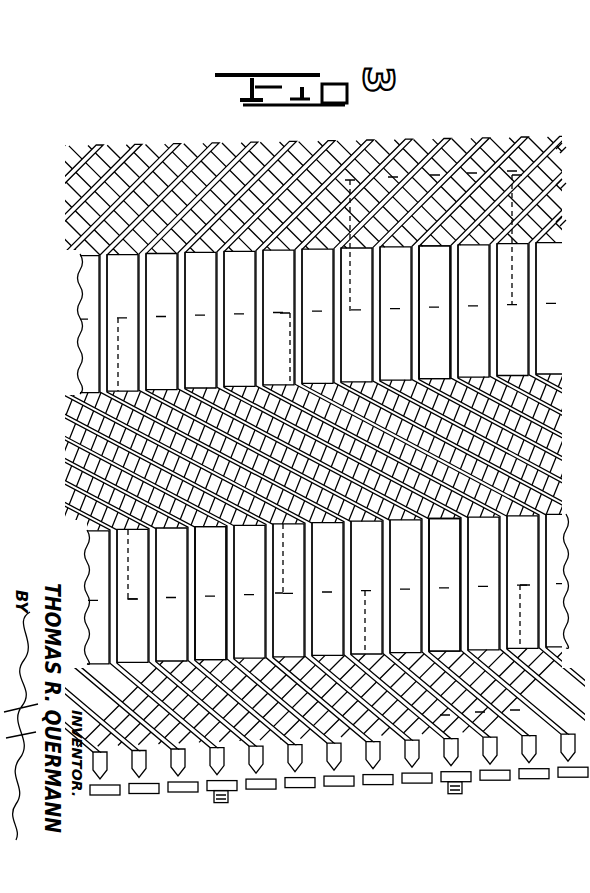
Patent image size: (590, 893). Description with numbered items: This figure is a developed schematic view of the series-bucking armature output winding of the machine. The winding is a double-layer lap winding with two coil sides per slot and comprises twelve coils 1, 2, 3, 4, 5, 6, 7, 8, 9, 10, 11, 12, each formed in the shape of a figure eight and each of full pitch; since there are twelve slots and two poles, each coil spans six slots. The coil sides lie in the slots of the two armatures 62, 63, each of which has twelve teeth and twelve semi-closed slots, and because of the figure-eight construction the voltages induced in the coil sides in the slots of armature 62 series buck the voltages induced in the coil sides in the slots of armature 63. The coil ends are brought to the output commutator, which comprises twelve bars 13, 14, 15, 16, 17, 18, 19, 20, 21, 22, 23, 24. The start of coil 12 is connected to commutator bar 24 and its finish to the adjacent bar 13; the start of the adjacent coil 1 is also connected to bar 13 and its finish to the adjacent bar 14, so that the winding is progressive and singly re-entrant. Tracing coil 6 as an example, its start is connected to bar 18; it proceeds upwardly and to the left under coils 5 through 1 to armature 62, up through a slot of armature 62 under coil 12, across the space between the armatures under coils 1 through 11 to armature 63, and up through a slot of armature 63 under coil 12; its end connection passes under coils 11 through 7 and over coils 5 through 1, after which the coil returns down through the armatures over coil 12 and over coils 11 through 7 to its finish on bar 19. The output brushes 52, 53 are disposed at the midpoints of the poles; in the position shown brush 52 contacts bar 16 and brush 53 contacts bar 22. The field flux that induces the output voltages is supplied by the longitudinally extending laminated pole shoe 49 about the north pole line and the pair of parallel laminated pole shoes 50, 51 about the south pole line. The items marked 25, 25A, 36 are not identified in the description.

The coil 1 is at (96, 145).
The coil 2 is at (136, 144).
The coil 3 is at (174, 144).
The coil 4 is at (214, 143).
The coil 5 is at (252, 142).
The coil 6 is at (292, 141).
The coil 7 is at (330, 141).
The coil 8 is at (370, 140).
The coil 9 is at (408, 139).
The coil 10 is at (448, 138).
The coil 11 is at (486, 138).
The coil 12 is at (526, 137).
The commutator bar 13 is at (565, 807).
The commutator bar 14 is at (144, 794).
The commutator bar 15 is at (183, 792).
The commutator bar 16 is at (230, 803).
The commutator bar 17 is at (261, 789).
The commutator bar 18 is at (300, 788).
The commutator bar 19 is at (339, 786).
The commutator bar 20 is at (378, 785).
The commutator bar 21 is at (417, 783).
The commutator bar 22 is at (464, 794).
The commutator bar 23 is at (495, 780).
The commutator bar 24 is at (534, 779).
The conductor 25 is at (589, 126).
The conductor 25A is at (588, 149).
The conductor 36 is at (582, 94).
The laminated pole shoe 49 is at (200, 598).
The laminated pole shoe 50 is at (448, 578).
The laminated pole shoe 51 is at (434, 318).
The output brush 52 is at (214, 803).
The output brush 53 is at (448, 794).
The armature 62 is at (79, 571).
The armature 63 is at (70, 350).